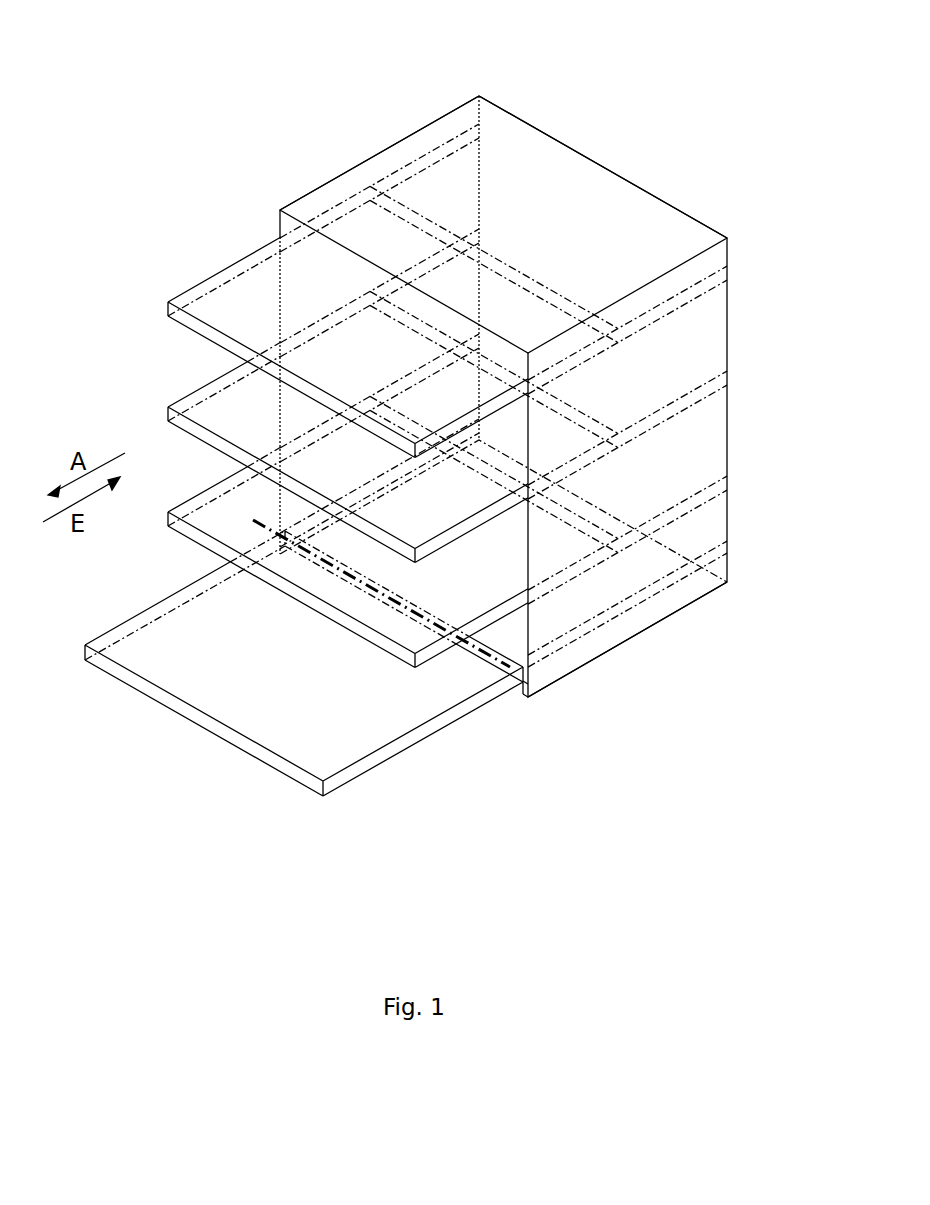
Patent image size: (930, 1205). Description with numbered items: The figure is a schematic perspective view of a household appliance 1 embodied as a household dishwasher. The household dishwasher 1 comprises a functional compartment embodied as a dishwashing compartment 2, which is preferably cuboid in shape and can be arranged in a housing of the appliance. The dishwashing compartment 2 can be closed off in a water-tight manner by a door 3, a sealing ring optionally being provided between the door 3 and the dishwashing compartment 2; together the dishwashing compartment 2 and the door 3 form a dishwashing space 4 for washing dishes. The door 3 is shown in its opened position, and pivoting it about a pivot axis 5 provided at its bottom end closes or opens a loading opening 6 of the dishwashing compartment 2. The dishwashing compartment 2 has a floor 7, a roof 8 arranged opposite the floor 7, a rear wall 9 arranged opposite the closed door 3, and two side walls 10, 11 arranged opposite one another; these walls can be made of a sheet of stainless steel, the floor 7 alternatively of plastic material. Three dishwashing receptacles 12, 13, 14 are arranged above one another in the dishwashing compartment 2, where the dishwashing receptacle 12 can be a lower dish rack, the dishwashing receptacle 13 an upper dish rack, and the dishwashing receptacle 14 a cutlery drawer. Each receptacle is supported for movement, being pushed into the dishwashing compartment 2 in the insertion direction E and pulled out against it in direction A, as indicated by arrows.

The household appliance 1 is at (331, 99).
The dishwashing compartment 2 is at (319, 190).
The door 3 is at (162, 629).
The dishwashing space 4 is at (503, 395).
The pivot axis 5 is at (540, 688).
The loading opening 6 is at (513, 625).
The floor 7 is at (620, 594).
The roof 8 is at (528, 138).
The rear wall 9 is at (636, 198).
The side wall 10 is at (390, 176).
The side wall 11 is at (700, 352).
The dishwashing receptacle 12 is at (193, 527).
The dishwashing receptacle 13 is at (193, 420).
The dishwashing receptacle 14 is at (231, 288).